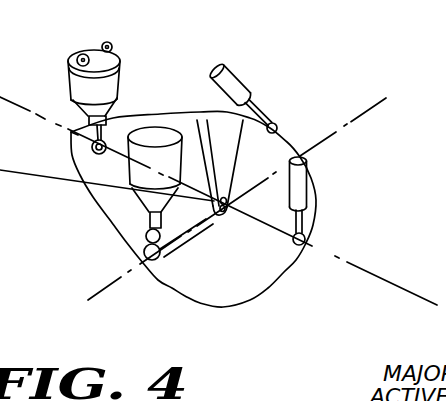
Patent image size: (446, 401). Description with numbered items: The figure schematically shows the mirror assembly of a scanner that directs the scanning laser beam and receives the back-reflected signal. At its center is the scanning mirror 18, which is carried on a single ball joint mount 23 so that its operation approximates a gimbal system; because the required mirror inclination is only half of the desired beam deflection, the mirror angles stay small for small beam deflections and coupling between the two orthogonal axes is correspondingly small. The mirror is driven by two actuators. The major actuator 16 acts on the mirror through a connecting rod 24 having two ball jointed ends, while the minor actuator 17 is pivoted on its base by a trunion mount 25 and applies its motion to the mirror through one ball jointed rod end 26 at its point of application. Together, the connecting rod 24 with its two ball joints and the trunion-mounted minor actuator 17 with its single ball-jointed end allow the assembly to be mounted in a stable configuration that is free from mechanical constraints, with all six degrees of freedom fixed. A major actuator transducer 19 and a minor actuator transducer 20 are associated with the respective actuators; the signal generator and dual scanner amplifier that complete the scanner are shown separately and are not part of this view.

The major actuator 16 is at (153, 137).
The minor actuator 17 is at (122, 75).
The scanning mirror 18 is at (280, 263).
The major actuator transducer 19 is at (240, 88).
The minor actuator transducer 20 is at (307, 183).
The ball joint mount 23 is at (223, 215).
The connecting rod 24 is at (143, 232).
The trunion mount 25 is at (102, 40).
The ball jointed rod end 26 is at (79, 134).